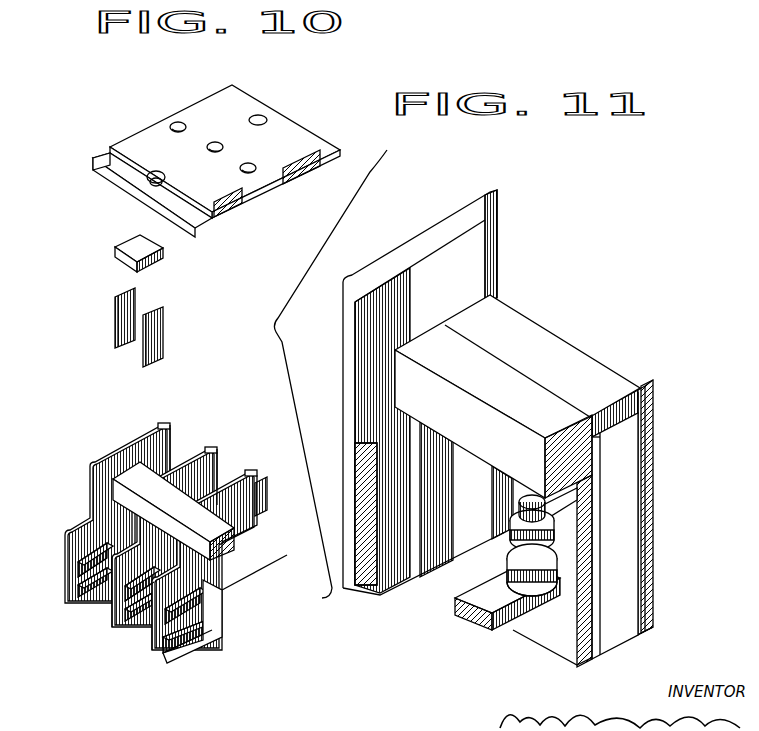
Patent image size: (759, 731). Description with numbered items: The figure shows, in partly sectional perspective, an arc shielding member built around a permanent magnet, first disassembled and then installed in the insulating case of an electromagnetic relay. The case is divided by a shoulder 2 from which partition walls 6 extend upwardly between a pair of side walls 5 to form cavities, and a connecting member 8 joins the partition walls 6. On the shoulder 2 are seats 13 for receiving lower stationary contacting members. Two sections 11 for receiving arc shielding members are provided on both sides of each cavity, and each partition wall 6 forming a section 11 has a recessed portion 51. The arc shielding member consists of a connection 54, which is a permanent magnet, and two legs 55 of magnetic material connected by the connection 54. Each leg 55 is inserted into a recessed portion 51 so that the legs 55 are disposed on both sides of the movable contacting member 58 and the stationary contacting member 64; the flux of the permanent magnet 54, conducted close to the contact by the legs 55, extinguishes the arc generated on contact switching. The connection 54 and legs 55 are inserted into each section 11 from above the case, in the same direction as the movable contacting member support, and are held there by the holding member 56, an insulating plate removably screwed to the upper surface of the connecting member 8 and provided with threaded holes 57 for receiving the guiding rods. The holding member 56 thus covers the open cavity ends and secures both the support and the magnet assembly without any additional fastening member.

In FIG. 10, the shoulder 2 is at (227, 590).
In FIG. 10, the side wall 5 is at (80, 525).
In FIG. 11, the side wall 5 is at (505, 245).
In FIG. 10, the partition wall 6 is at (108, 618).
In FIG. 10, the connecting member 8 is at (237, 558).
In FIG. 11, the connecting member 8 is at (593, 437).
In FIG. 10, the section for receiving arc shielding member 11 is at (184, 470).
In FIG. 10, the seat 13 is at (97, 605).
In FIG. 10, the recessed portion 51 is at (172, 447).
In FIG. 10, the connection (permanent magnet) 54 is at (166, 252).
In FIG. 11, the connection (permanent magnet) 54 is at (522, 318).
In FIG. 10, the leg (magnetic body) 55 is at (114, 323).
In FIG. 11, the leg (magnetic body) 55 is at (625, 496).
In FIG. 10, the holding member 56 is at (322, 164).
In FIG. 10, the threaded hole 57 is at (185, 124).
In FIG. 11, the movable contacting member 58 is at (585, 492).
In FIG. 11, the stationary contacting member 64 is at (516, 633).